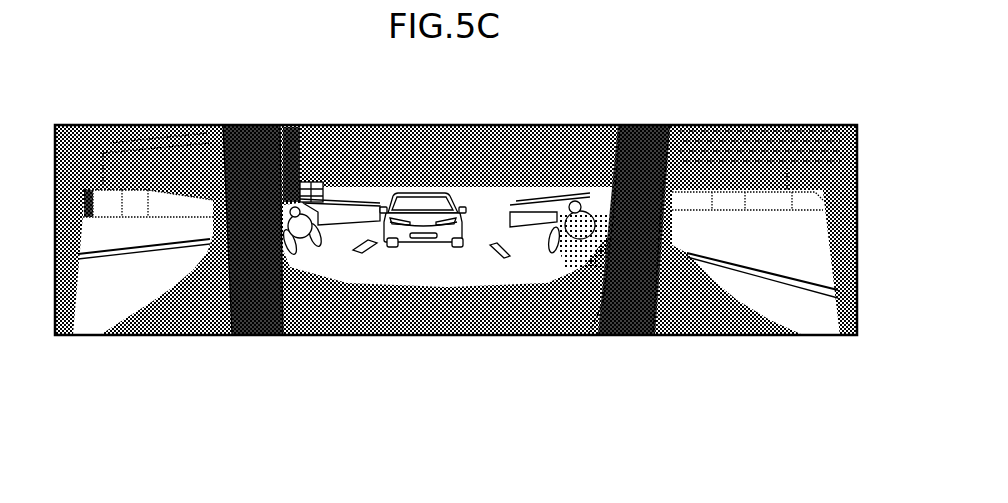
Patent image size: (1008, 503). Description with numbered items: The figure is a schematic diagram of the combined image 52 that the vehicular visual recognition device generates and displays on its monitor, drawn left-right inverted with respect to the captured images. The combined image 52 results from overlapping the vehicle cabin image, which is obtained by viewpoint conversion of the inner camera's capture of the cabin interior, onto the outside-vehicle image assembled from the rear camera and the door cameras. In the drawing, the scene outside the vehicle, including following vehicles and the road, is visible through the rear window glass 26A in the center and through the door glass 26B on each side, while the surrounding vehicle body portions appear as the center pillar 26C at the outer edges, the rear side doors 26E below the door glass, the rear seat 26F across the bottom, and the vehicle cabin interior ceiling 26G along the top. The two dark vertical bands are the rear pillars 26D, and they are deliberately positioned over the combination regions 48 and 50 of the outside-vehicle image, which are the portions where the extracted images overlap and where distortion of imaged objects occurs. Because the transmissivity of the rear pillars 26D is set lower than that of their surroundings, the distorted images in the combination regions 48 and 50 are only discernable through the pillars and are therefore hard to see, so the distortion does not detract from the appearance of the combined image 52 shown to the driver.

The combined image 52 is at (490, 125).
The rear window glass 26A is at (477, 193).
The door glass 26B is at (102, 313).
The center pillar 26C is at (65, 296).
The rear pillars 26D is at (207, 243).
The rear side doors 26E is at (175, 320).
The rear seat 26F is at (403, 323).
The vehicle cabin interior ceiling 26G is at (368, 128).
The combination region 48 is at (587, 337).
The combination region 50 is at (282, 322).